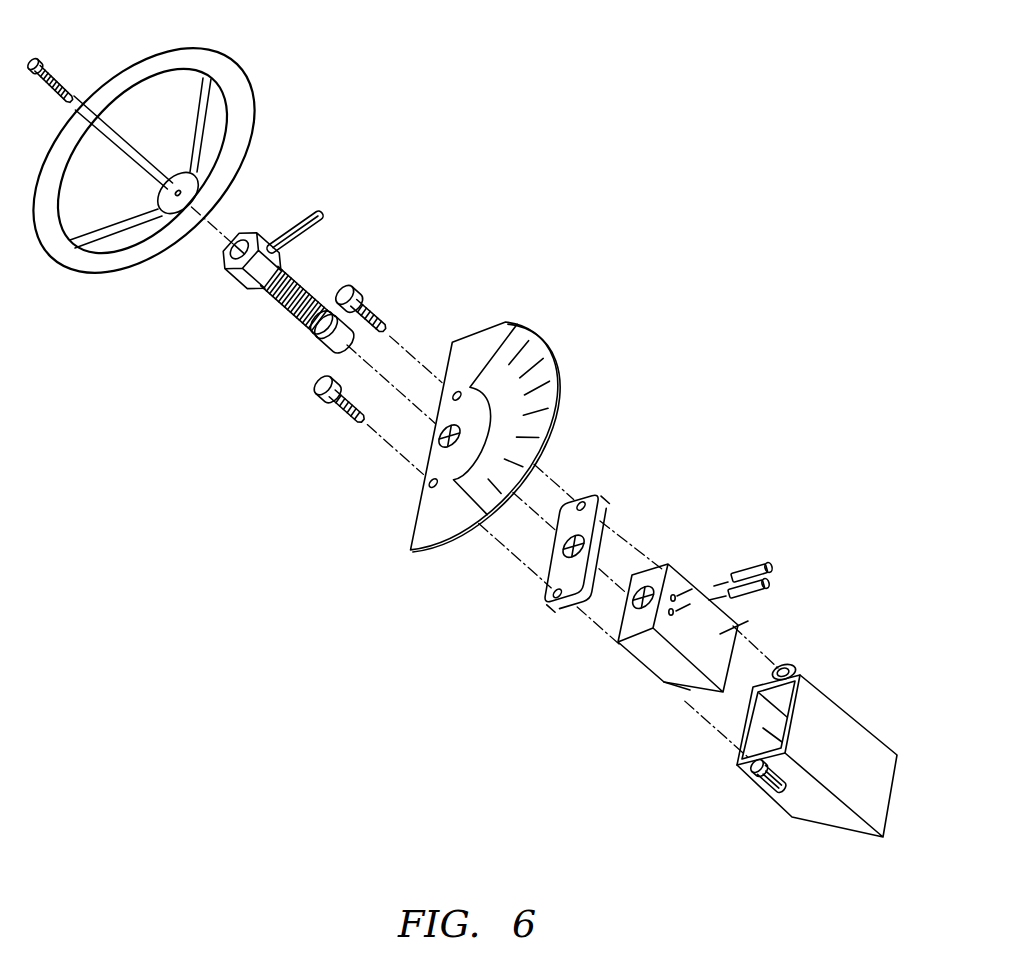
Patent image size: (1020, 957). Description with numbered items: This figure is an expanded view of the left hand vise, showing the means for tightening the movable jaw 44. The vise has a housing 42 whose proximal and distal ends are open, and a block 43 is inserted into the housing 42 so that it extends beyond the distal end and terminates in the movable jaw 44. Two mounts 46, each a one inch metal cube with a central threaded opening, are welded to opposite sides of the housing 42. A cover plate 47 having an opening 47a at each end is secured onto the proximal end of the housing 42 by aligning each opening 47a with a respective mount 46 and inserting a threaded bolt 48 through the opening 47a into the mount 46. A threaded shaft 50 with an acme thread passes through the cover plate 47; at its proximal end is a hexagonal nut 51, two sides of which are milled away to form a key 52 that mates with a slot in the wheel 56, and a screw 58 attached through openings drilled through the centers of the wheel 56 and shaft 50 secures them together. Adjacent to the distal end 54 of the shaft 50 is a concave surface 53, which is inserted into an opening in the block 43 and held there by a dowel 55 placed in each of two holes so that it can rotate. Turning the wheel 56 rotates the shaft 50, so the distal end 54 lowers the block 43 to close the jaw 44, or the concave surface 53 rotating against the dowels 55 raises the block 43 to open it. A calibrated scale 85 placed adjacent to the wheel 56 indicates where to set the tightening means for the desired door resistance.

The housing 42 is at (845, 735).
The block 43 is at (735, 627).
The movable jaw 44 is at (690, 690).
The mount 46 is at (795, 668).
The cover plate 47 is at (601, 503).
The opening 47a is at (580, 503).
The threaded bolt 48 is at (375, 312).
The threaded shaft 50 is at (275, 306).
The hexagonal nut 51 is at (233, 270).
The key 52 is at (249, 244).
The concave surface 53 is at (326, 330).
The distal end 54 is at (337, 342).
The dowel 55 is at (769, 580).
The wheel 56 is at (249, 134).
The screw 58 is at (55, 73).
The scale 85 is at (534, 344).